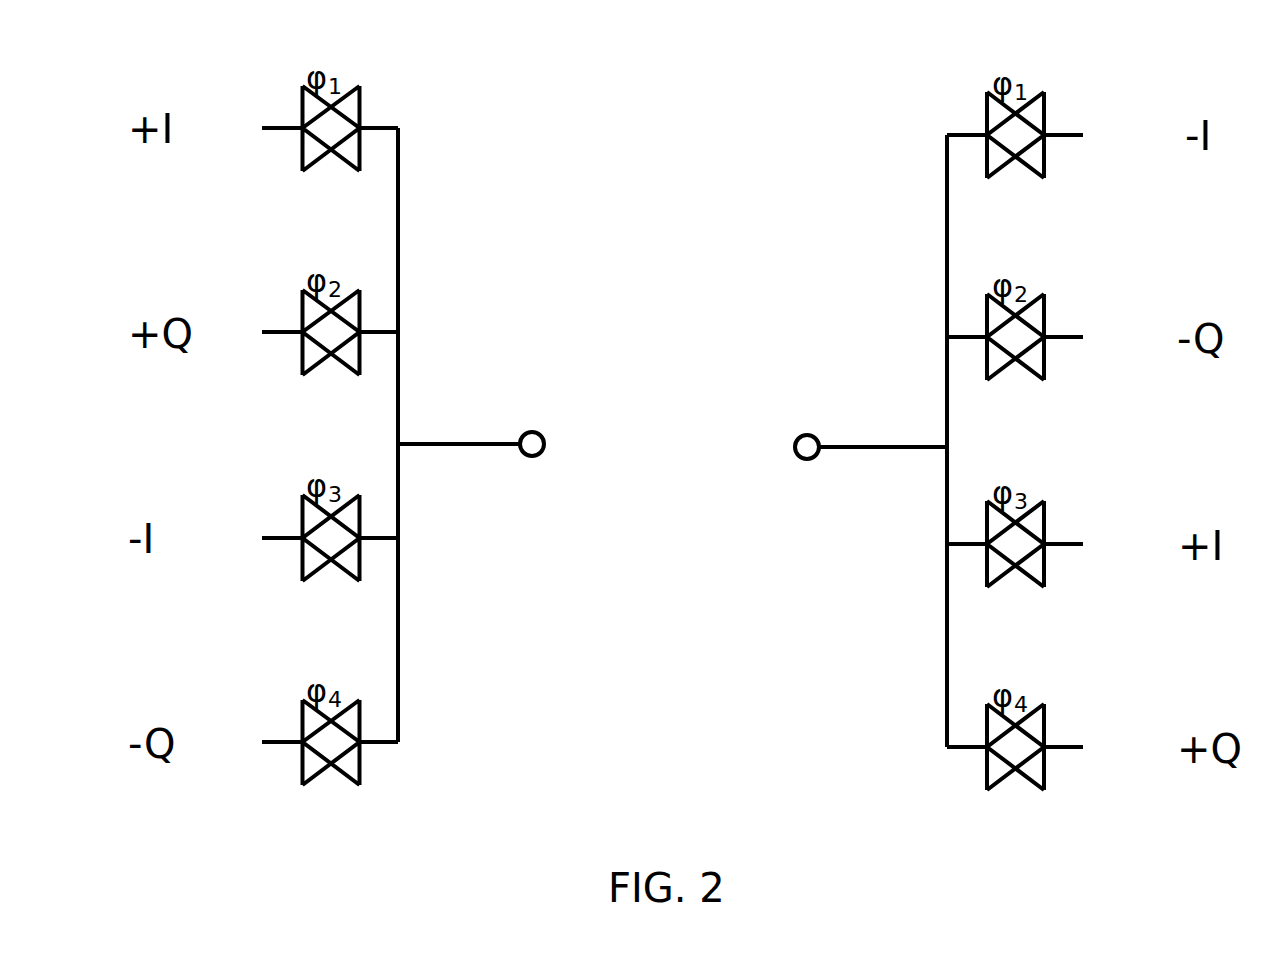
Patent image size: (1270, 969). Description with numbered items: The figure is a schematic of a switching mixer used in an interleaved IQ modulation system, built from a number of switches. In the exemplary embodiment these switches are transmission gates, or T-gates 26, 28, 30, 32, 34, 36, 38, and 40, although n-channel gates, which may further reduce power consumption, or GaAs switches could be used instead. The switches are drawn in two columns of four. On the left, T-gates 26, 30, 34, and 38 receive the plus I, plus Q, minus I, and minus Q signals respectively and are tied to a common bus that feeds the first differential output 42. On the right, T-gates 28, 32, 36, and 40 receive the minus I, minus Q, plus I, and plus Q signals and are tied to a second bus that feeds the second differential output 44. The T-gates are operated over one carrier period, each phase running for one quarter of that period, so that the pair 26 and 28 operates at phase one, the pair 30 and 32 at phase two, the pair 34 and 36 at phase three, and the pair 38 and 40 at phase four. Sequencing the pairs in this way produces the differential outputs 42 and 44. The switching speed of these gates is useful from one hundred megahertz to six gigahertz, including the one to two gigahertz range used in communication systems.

The transmission gate 26 is at (360, 100).
The transmission gate 30 is at (360, 308).
The transmission gate 34 is at (358, 552).
The transmission gate 38 is at (358, 760).
The transmission gate 28 is at (987, 108).
The transmission gate 32 is at (987, 325).
The transmission gate 36 is at (985, 557).
The transmission gate 40 is at (985, 767).
The differential output 42 is at (499, 422).
The differential output 44 is at (846, 425).